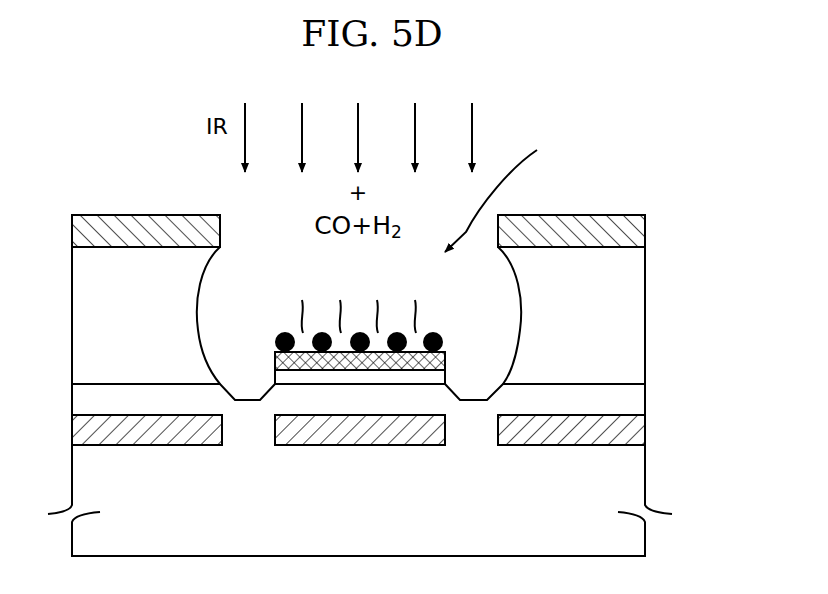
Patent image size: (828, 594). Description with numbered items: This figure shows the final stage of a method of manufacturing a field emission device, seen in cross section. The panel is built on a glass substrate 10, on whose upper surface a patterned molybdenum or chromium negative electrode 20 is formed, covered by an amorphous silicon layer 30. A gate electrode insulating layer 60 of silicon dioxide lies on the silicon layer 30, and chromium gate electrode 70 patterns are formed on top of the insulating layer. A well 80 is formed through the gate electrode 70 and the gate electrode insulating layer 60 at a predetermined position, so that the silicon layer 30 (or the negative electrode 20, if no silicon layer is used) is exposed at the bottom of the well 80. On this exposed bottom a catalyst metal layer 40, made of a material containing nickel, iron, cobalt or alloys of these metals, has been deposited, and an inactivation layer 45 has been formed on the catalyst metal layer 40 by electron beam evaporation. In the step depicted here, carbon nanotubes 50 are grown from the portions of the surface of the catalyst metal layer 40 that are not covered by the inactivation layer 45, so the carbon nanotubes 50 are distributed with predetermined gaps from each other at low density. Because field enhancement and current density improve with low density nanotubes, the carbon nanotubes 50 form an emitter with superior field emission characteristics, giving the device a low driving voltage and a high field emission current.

The substrate 10 is at (632, 478).
The negative electrode 20 is at (632, 428).
The silicon layer 30 is at (632, 393).
The catalyst metal layer 40 is at (447, 357).
The inactivation layer 45 is at (277, 331).
The carbon nanotubes 50 is at (300, 313).
The gate electrode insulating layer 60 is at (632, 316).
The gate electrode 70 is at (632, 230).
The well 80 is at (504, 188).